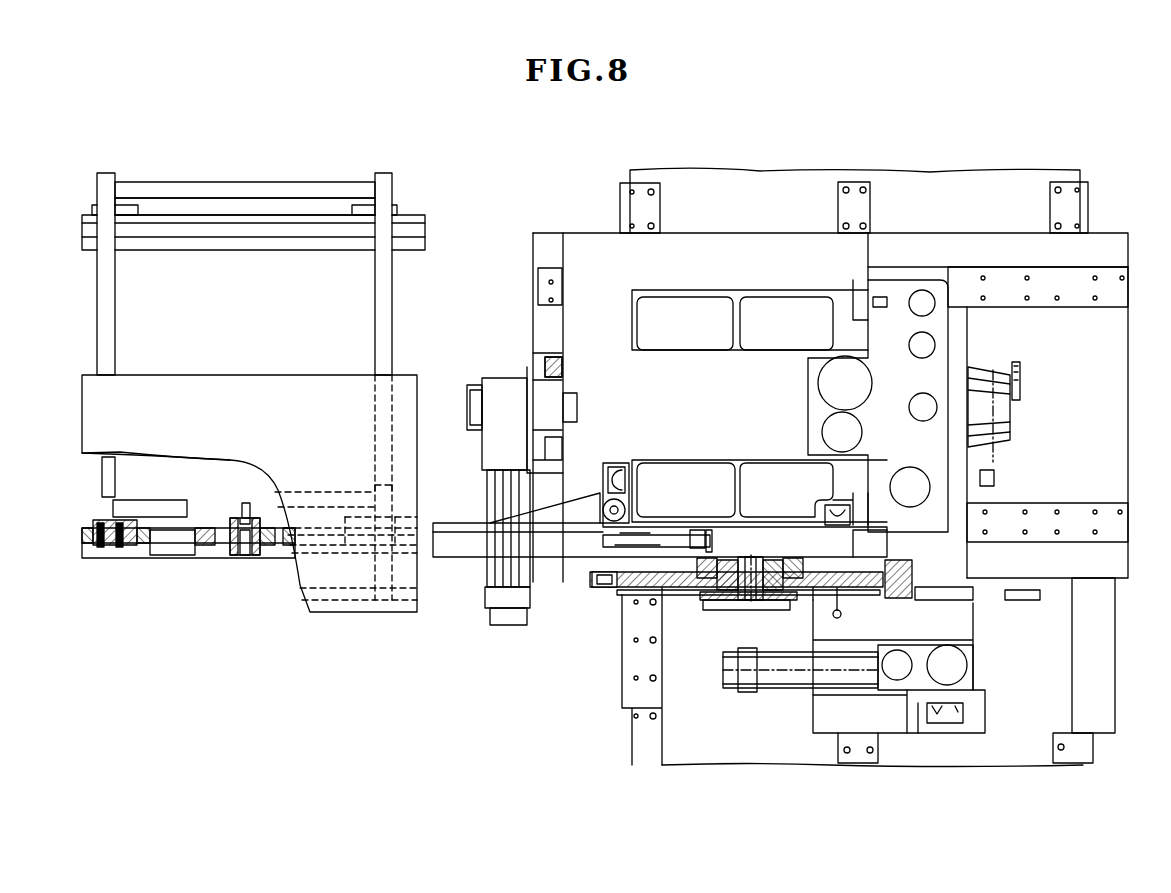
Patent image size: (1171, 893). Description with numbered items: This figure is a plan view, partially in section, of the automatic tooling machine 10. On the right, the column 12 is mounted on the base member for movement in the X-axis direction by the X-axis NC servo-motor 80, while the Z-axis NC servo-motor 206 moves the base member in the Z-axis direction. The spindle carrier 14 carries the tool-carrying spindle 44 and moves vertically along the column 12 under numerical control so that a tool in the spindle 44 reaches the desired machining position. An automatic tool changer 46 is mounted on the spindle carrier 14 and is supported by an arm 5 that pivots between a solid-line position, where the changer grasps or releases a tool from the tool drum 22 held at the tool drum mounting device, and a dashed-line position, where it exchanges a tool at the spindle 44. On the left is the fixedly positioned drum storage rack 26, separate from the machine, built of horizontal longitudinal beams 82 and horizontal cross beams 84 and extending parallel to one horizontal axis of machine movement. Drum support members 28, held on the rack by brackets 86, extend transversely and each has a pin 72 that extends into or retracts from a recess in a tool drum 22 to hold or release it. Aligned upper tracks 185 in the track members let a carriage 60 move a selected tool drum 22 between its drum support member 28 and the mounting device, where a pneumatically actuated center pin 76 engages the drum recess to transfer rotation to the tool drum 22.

The arm 5 is at (987, 478).
The automatic tooling machine 10 is at (897, 162).
The column 12 is at (712, 393).
The spindle carrier 14 is at (892, 383).
The tool drum 22 is at (650, 590).
The drum storage rack 26 is at (413, 292).
The drum support member 28 is at (407, 228).
The spindle 44 is at (975, 393).
The automatic tool changer 46 is at (1020, 448).
The carriage 60 is at (693, 537).
The pin 72 is at (245, 548).
The center pin 76 is at (757, 597).
The X-axis NC servo-motor 80 is at (512, 578).
The horizontal longitudinal beam 82 is at (113, 312).
The horizontal cross beam 84 is at (213, 190).
The bracket 86 is at (110, 210).
The upper tracks 185 is at (583, 543).
The Z-axis NC servo-motor 206 is at (795, 678).